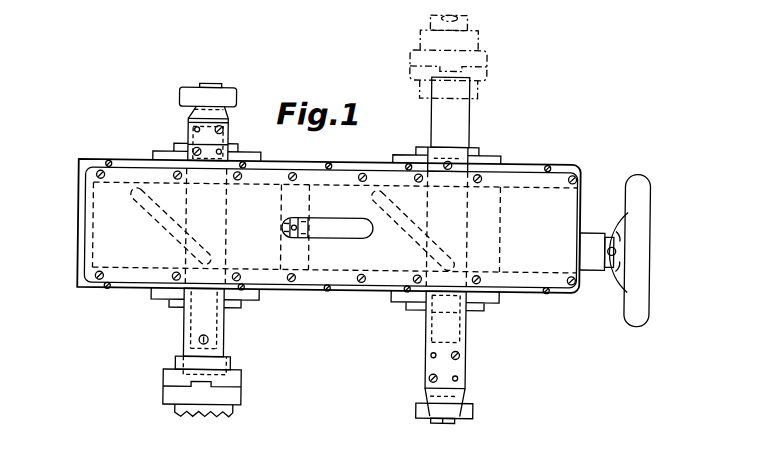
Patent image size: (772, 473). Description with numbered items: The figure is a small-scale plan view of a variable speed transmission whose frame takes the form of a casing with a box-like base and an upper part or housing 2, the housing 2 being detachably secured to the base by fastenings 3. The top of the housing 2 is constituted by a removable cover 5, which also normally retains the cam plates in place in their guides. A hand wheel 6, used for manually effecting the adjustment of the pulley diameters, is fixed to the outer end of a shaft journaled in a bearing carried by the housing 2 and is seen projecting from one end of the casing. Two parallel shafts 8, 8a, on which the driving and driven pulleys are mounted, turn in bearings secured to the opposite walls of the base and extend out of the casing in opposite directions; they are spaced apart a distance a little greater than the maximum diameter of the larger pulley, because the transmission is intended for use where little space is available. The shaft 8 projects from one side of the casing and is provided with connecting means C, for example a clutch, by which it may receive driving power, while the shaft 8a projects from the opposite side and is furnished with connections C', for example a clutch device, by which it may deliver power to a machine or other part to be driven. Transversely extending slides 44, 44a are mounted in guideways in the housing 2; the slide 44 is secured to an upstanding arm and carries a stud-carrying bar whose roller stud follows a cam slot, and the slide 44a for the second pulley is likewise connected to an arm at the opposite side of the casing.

The housing 2 is at (568, 162).
The fastenings 3 is at (547, 163).
The removable cover 5 is at (88, 224).
The hand wheel 6 is at (646, 289).
The shaft 8 is at (466, 121).
The shaft 8a is at (177, 364).
The slide 44 is at (468, 359).
The slide 44a is at (278, 333).
The connecting means C is at (466, 57).
The connections C' is at (135, 400).